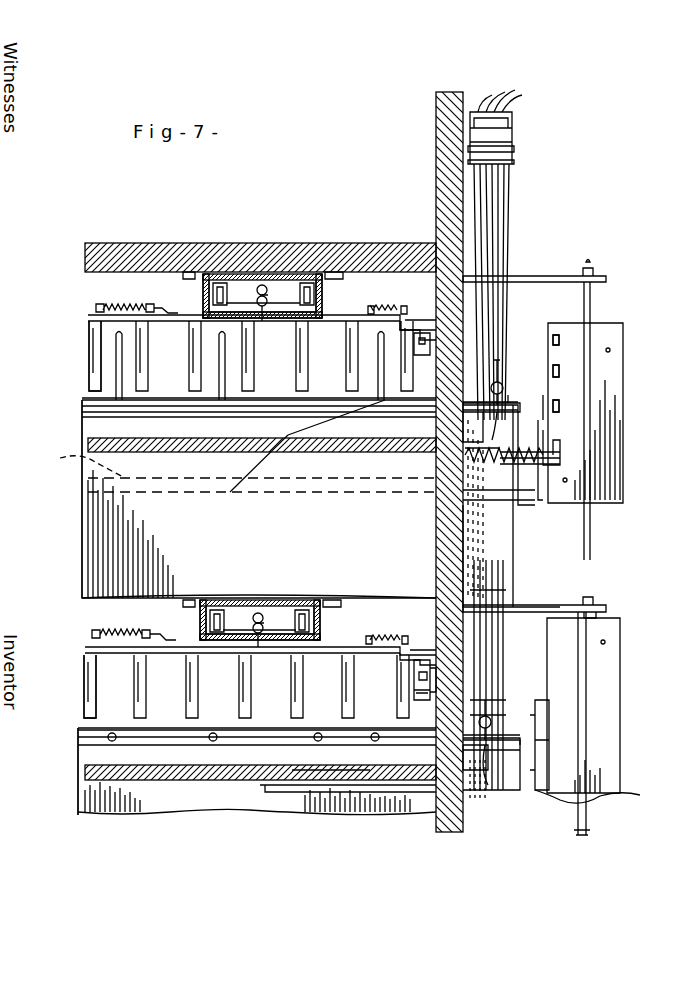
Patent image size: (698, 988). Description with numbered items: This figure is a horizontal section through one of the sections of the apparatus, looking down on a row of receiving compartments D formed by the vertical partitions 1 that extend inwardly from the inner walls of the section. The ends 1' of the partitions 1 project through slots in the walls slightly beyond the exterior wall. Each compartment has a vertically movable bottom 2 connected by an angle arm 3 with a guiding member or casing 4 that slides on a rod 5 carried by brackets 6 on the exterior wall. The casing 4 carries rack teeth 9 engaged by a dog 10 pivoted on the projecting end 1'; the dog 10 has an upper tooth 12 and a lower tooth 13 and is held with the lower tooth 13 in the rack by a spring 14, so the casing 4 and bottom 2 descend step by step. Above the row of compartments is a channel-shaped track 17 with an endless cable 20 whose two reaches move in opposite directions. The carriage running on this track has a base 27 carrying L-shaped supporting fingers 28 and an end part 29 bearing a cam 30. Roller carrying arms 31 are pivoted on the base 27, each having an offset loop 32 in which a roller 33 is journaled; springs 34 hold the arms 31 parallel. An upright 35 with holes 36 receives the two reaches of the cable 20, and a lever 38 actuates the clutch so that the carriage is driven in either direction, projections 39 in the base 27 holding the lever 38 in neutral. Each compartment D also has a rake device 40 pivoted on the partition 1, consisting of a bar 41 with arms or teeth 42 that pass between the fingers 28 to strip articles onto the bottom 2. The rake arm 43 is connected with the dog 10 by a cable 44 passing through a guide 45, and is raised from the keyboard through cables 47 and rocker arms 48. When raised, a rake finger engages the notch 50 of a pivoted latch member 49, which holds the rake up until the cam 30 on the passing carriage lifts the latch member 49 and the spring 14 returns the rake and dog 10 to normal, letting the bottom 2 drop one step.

The vertical partition 1 is at (236, 607).
The projecting end of partition 1' is at (511, 620).
The vertically movable bottom 2 is at (62, 460).
The angle arm 3 is at (530, 500).
The guiding member or casing 4 is at (615, 330).
The rod 5 is at (592, 548).
The bracket 6 is at (606, 279).
The rack teeth 9 is at (560, 408).
The dog 10 is at (560, 464).
The upper tooth 12 is at (560, 440).
The lower tooth 13 is at (588, 828).
The spring 14 is at (436, 466).
The channel-shaped track 17 is at (203, 293).
The endless cable 20 is at (262, 610).
The base 27 is at (89, 340).
The L-shaped supporting fingers 28 is at (89, 357).
The end part of base 29 is at (410, 410).
The cam 30 is at (430, 340).
The roller carrying arm 31 is at (160, 315).
The offset loop 32 is at (218, 283).
The roller 33 is at (222, 287).
The spring 34 is at (110, 304).
The upright 35 is at (266, 297).
The hole 36 is at (264, 285).
The lever 38 is at (422, 325).
The projection 39 is at (414, 318).
The rake device 40 is at (88, 420).
The bar 41 is at (96, 398).
The arms or teeth 42 is at (222, 370).
The arm 43 is at (502, 385).
The cable 44 is at (505, 408).
The guide 45 is at (490, 786).
The cable 47 is at (484, 670).
The rocker arm 48 is at (512, 134).
The latch member 49 is at (430, 333).
The notch 50 is at (420, 700).
The receiving compartment D is at (115, 538).